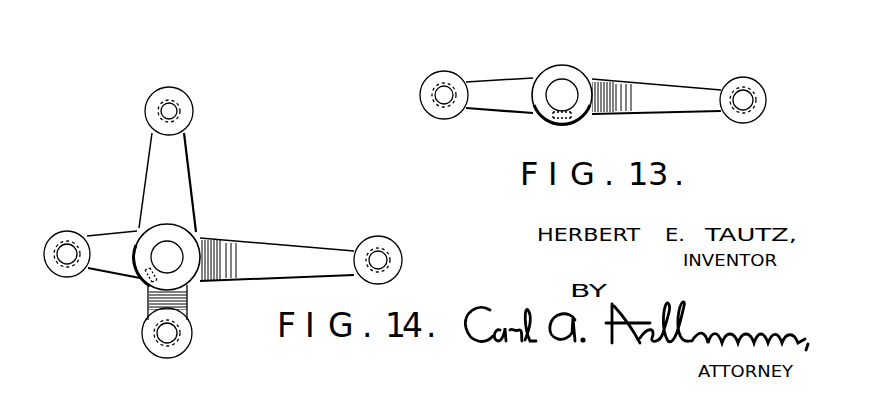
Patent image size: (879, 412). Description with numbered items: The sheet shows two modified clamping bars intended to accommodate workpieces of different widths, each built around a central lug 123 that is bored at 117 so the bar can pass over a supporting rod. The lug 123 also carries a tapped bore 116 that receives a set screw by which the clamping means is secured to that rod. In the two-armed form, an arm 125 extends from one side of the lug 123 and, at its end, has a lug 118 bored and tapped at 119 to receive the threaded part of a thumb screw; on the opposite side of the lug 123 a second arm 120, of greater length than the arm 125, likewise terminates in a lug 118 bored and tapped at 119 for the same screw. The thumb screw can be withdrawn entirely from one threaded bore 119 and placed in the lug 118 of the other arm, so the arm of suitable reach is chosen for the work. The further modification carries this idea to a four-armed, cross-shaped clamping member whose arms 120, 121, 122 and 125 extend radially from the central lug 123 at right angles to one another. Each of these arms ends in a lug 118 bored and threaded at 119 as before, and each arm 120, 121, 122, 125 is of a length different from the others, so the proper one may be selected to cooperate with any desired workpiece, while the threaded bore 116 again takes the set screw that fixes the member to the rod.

In FIG. 13, the tapped bore 116 is at (550, 120).
In FIG. 14, the tapped bore 116 is at (146, 281).
In FIG. 13, the bore 117 is at (568, 92).
In FIG. 14, the bore 117 is at (174, 252).
In FIG. 13, the lug 118 is at (421, 96).
In FIG. 14, the lug 118 is at (147, 107).
In FIG. 13, the threaded bore 119 is at (443, 92).
In FIG. 14, the threaded bore 119 is at (170, 111).
In FIG. 13, the arm 120 is at (672, 97).
In FIG. 14, the arm 120 is at (170, 170).
In FIG. 14, the arm 121 is at (282, 258).
In FIG. 14, the arm 122 is at (186, 299).
In FIG. 13, the lug 123 is at (561, 73).
In FIG. 14, the lug 123 is at (180, 232).
In FIG. 13, the arm 125 is at (502, 90).
In FIG. 14, the arm 125 is at (112, 243).